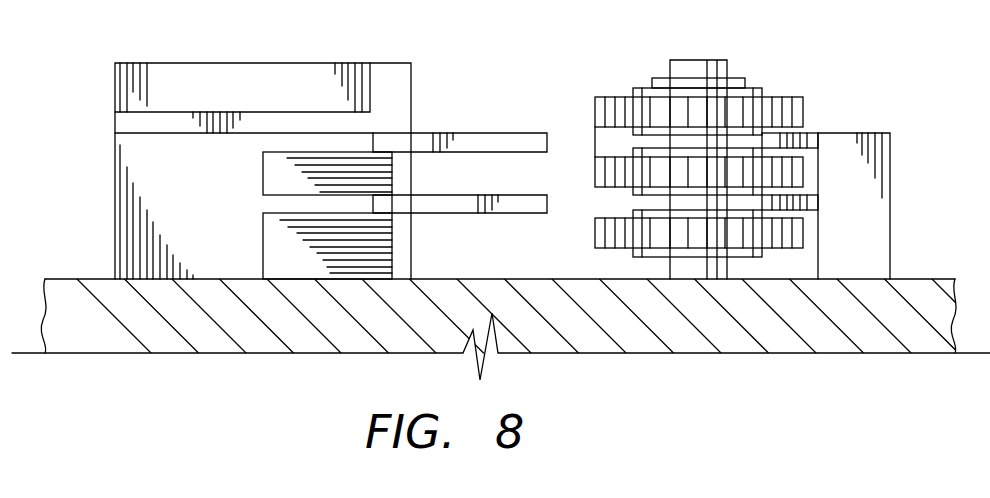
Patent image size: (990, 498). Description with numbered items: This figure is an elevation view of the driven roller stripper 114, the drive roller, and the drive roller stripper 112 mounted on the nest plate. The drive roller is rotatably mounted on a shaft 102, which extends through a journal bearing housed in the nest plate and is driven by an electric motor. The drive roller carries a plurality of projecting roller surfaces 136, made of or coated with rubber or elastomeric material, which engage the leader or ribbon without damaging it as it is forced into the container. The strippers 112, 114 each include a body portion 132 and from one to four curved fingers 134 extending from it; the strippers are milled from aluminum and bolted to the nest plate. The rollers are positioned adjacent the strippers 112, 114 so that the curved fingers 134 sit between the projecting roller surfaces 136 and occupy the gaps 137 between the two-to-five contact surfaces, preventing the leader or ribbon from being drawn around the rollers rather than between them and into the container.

The shaft 102 is at (697, 65).
The drive roller stripper 112 is at (860, 173).
The driven roller stripper 114 is at (228, 215).
The body portion 132 is at (507, 142).
The curved finger 134 is at (802, 115).
The projecting roller surface 136 is at (772, 98).
The gap 137 is at (602, 142).